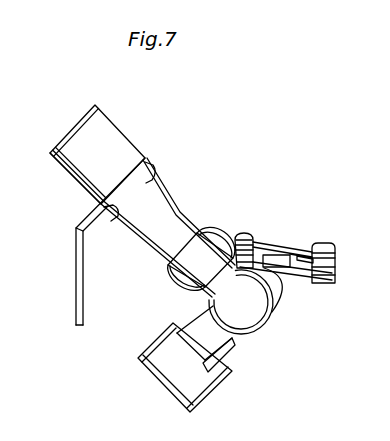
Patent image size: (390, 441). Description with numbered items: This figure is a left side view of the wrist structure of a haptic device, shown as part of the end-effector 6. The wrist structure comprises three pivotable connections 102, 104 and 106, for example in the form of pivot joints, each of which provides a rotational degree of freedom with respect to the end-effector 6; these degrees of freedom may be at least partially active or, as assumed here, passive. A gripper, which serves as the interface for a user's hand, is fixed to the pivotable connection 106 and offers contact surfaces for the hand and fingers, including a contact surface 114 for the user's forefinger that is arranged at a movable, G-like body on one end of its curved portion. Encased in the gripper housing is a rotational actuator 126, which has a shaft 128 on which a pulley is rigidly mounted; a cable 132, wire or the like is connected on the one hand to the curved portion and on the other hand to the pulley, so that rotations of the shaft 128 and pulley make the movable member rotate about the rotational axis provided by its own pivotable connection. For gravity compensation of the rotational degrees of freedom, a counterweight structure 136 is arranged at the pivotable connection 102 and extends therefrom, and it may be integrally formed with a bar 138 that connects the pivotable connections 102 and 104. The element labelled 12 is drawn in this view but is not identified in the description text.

The end-effector 6 is at (75, 275).
The mounting bracket 12 is at (337, 248).
The pivotable connection 102 is at (108, 123).
The pivotable connection 104 is at (246, 308).
The pivotable connection 106 is at (156, 388).
The contact surface 114 is at (281, 289).
The rotational actuator 126 is at (238, 352).
The shaft 128 is at (255, 231).
The cable 132 is at (283, 252).
The counterweight structure 136 is at (214, 230).
The bar 138 is at (158, 210).